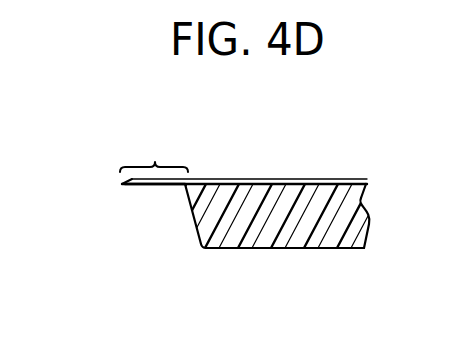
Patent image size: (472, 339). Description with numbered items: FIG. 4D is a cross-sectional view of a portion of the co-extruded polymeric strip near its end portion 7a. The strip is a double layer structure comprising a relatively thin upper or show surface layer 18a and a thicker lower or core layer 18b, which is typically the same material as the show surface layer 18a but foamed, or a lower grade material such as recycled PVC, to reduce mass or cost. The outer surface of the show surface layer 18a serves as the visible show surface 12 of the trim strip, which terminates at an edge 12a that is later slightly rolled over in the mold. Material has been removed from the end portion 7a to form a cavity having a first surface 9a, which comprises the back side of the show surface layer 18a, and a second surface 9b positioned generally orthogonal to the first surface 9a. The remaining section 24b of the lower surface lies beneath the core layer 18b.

The show surface 12 is at (278, 180).
The edge of the show surface 12a is at (122, 184).
The end portion 7a is at (154, 154).
The first surface 9a is at (165, 185).
The second surface 9b is at (194, 228).
The show surface layer 18a is at (355, 181).
The core layer 18b is at (359, 208).
The second section of the lower surface 24b is at (318, 248).